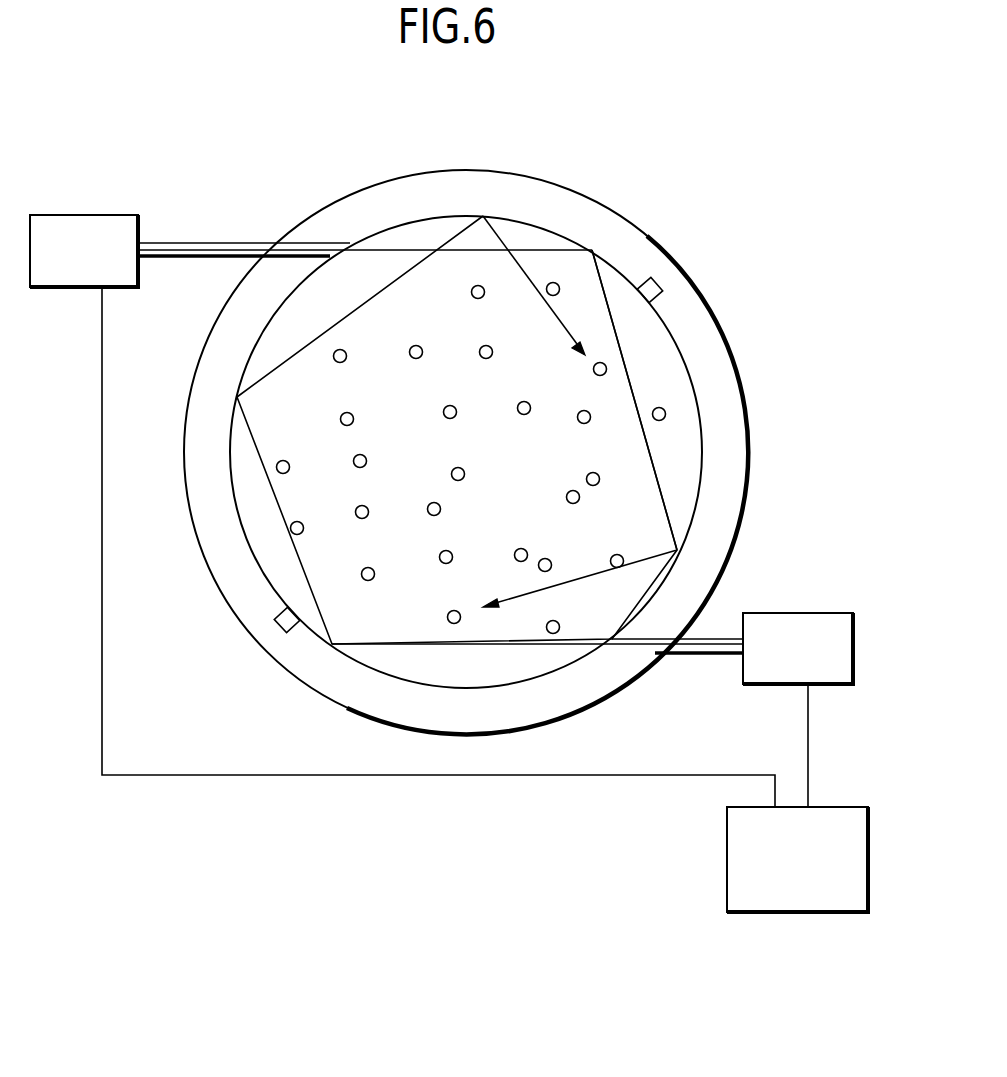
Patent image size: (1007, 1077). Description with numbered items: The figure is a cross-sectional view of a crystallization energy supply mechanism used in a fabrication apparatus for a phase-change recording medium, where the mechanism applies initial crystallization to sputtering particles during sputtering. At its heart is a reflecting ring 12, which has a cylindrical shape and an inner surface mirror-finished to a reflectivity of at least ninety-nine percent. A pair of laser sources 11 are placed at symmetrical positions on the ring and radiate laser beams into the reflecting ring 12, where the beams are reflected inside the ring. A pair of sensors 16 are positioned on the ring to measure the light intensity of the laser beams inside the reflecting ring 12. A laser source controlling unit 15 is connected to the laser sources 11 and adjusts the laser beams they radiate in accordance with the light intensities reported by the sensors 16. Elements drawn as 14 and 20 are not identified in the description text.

The laser source 11 is at (97, 215).
The reflecting ring 12 is at (482, 176).
The mirror 14 is at (412, 250).
The laser source controlling unit 15 is at (727, 845).
The sensor 16 is at (658, 283).
The particles 20 is at (590, 413).